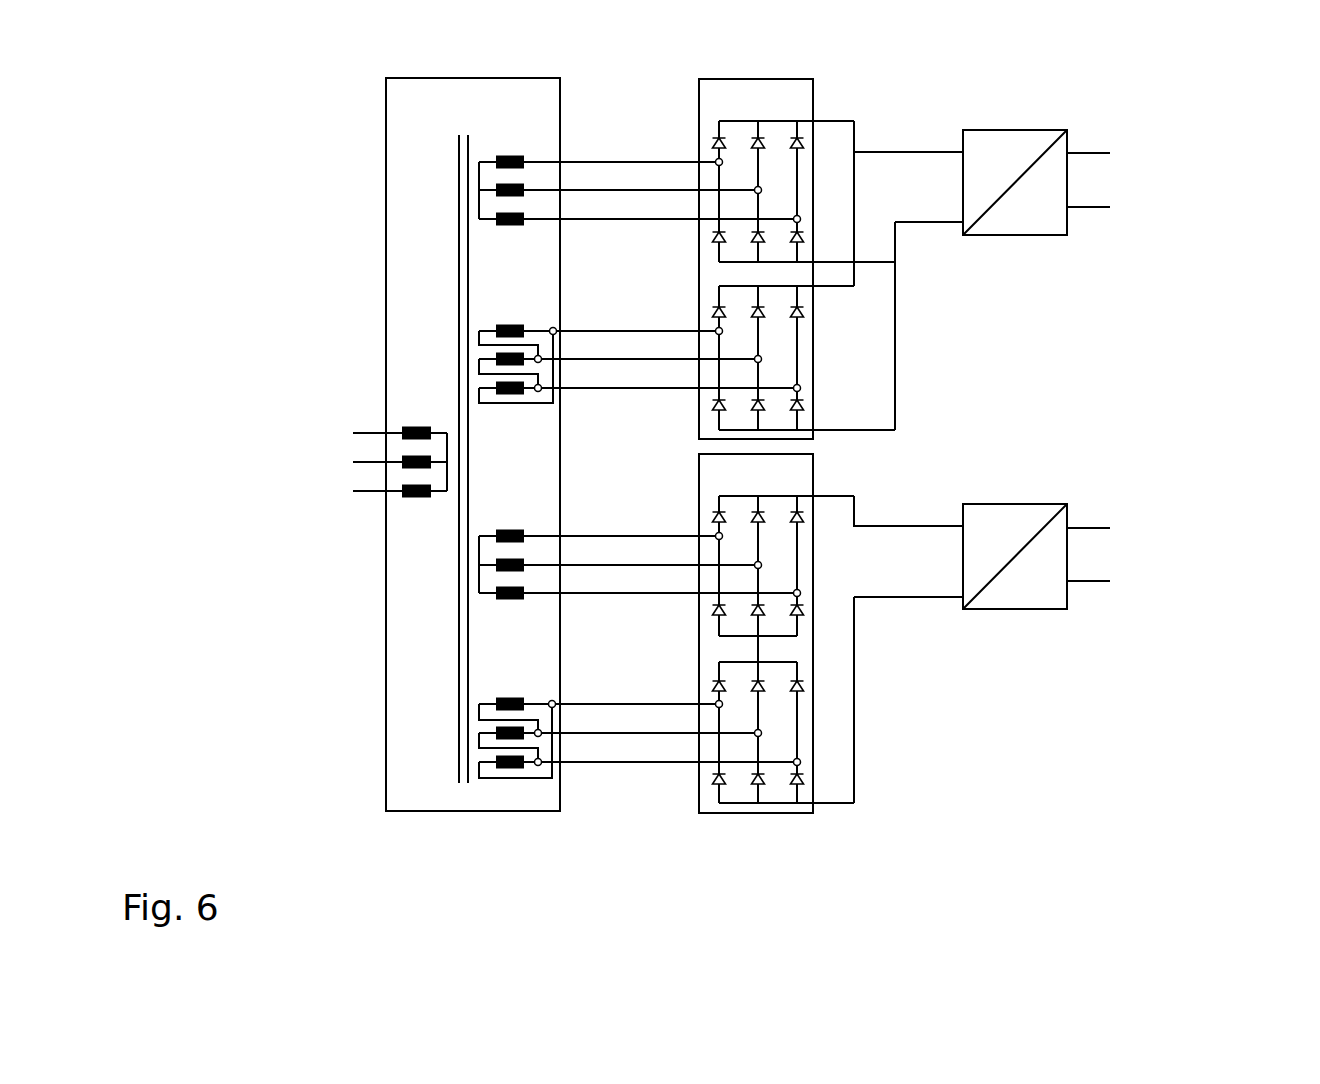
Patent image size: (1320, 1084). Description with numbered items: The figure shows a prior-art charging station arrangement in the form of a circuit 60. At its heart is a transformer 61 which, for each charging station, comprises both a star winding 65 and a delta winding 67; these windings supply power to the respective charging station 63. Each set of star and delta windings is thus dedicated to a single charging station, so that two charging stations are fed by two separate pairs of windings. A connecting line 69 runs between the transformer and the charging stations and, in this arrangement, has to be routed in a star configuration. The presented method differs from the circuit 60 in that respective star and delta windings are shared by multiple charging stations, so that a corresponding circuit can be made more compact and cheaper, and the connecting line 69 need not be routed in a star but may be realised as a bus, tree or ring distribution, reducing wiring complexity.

The circuit 60 is at (1224, 177).
The transformer 61 is at (562, 94).
The charging station 63 is at (815, 94).
The star winding 65 is at (535, 221).
The delta winding 67 is at (555, 397).
The connecting line 69 is at (667, 390).